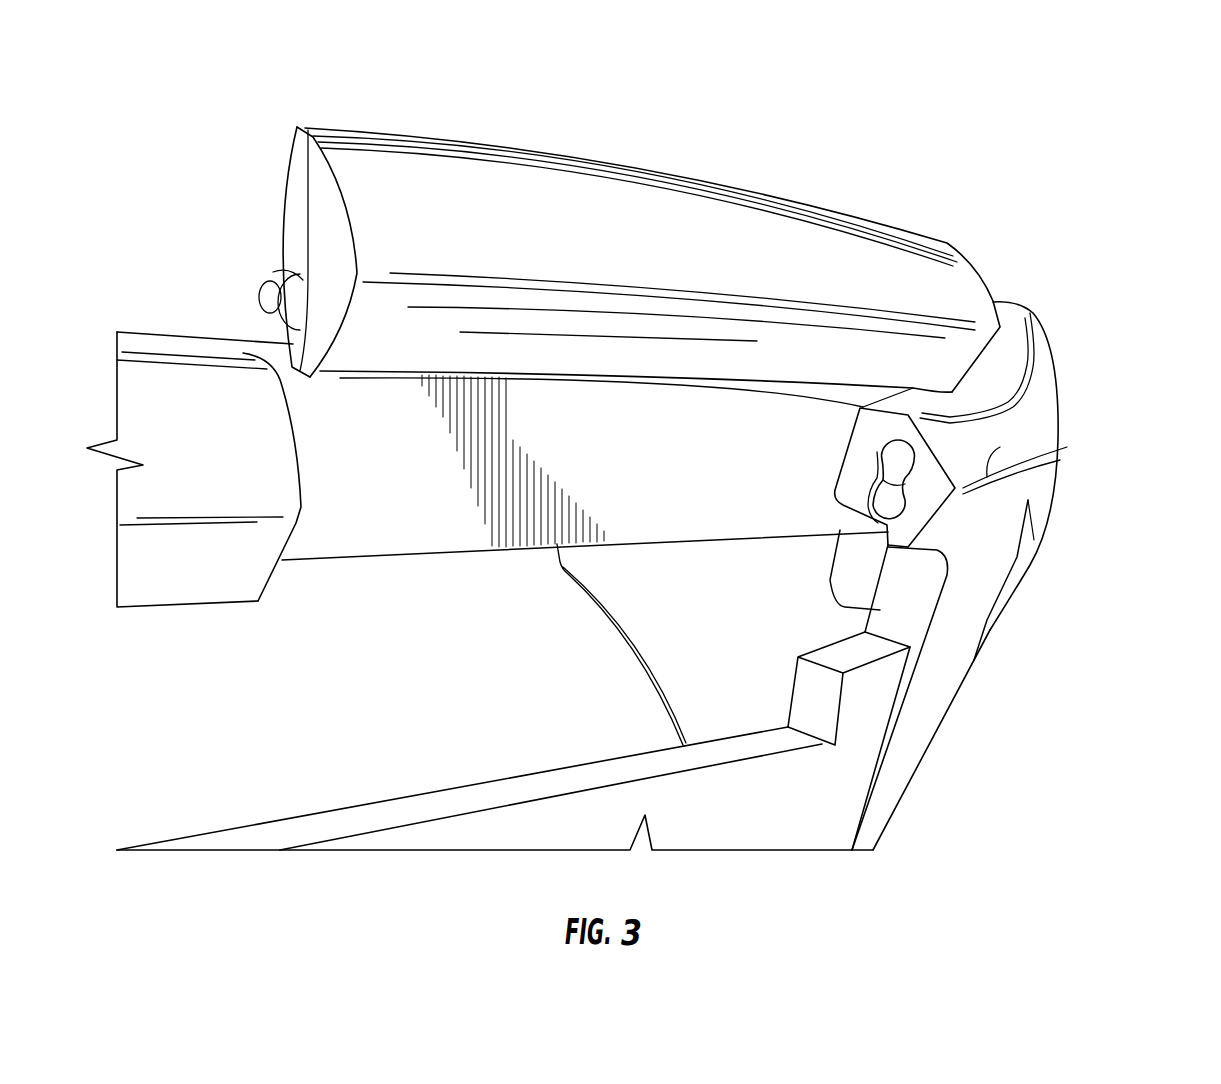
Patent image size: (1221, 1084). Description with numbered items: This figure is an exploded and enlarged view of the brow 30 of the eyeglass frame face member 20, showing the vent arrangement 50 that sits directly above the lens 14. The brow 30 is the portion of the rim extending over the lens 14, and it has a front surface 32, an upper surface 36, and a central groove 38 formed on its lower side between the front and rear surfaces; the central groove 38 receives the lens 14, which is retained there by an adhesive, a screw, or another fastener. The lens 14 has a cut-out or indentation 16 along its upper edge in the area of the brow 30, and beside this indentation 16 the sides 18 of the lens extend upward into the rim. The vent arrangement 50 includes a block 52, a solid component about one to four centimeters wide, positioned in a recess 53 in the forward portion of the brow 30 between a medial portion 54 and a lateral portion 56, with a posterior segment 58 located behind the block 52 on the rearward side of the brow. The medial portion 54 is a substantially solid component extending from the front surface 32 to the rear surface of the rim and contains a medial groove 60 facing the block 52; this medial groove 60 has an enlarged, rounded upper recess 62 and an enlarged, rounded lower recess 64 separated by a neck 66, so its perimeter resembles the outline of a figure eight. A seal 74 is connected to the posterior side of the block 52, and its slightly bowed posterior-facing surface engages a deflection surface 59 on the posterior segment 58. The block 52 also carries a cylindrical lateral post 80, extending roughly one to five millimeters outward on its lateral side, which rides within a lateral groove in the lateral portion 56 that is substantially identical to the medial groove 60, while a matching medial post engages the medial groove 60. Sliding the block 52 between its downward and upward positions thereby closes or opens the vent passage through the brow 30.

The lens 14 is at (793, 830).
The indentation 16 is at (381, 779).
The sides of the lens 18 is at (545, 778).
The face member 20 is at (994, 681).
The brow 30 is at (823, 272).
The front surface 32 is at (147, 393).
The upper surface 36 is at (183, 348).
The central groove 38 is at (916, 598).
The vent arrangement 50 is at (1037, 278).
The block 52 is at (498, 223).
The recess 53 is at (347, 582).
The medial portion 54 is at (987, 483).
The lateral portion 56 is at (227, 500).
The posterior segment 58 is at (400, 555).
The deflection surface 59 is at (472, 473).
The medial groove 60 is at (882, 478).
The upper recess 62 is at (905, 440).
The lower recess 64 is at (938, 549).
The neck 66 is at (905, 484).
The seal 74 is at (303, 122).
The lateral post 80 is at (270, 293).